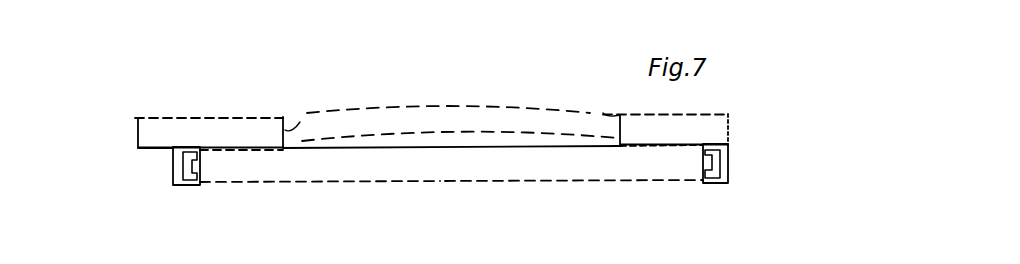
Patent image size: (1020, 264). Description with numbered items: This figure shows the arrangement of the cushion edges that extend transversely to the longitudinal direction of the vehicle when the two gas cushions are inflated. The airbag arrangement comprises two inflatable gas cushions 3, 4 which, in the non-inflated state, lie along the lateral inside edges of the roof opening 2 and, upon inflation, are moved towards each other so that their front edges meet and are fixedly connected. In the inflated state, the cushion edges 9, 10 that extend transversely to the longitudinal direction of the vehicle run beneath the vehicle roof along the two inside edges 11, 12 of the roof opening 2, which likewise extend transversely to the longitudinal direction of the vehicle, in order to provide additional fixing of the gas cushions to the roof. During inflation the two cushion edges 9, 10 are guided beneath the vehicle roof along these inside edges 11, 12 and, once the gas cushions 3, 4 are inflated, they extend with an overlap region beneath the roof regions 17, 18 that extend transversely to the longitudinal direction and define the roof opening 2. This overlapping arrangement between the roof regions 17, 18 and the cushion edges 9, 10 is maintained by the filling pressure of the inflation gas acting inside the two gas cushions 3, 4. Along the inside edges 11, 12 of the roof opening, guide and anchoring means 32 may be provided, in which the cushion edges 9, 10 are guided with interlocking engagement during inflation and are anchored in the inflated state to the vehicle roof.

The roof opening 2 is at (498, 100).
The inflatable gas cushion 3 is at (445, 170).
The inflatable gas cushion 4 is at (451, 186).
The cushion edge 9 is at (238, 172).
The cushion edge 10 is at (677, 168).
The inside edge 11 is at (285, 130).
The inside edge 12 is at (603, 113).
The roof region 17 is at (237, 128).
The roof region 18 is at (688, 113).
The guide and anchoring means 32 is at (175, 187).